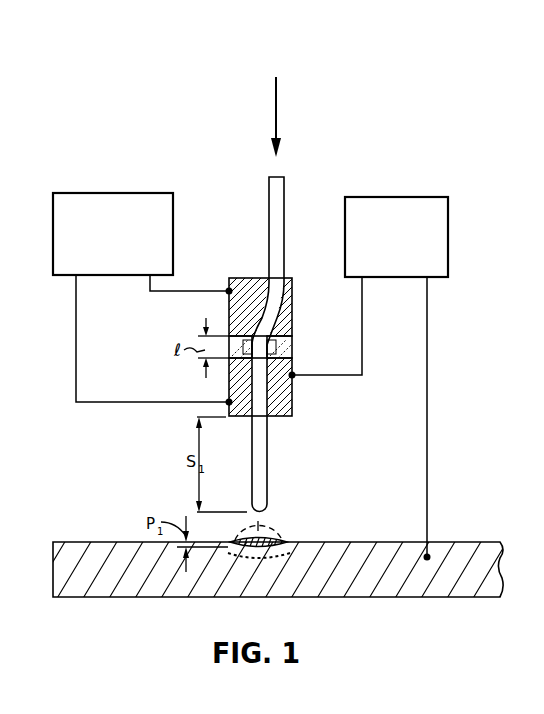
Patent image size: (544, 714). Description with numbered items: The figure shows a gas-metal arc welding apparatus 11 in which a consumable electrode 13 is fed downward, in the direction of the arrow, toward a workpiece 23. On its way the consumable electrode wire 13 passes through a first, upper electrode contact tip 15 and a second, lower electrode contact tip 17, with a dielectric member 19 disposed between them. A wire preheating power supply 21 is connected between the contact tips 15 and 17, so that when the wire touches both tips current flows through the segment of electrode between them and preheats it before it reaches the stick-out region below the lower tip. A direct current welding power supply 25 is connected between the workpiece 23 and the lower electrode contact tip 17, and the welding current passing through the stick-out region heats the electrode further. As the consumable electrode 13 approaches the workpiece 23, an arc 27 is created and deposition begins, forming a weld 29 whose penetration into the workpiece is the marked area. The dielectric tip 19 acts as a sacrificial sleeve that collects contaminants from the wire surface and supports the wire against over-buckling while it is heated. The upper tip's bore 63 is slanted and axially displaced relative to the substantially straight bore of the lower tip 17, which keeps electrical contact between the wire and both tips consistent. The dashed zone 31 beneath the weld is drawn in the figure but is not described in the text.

The gas-metal arc welding apparatus 11 is at (289, 162).
The consumable electrode 13 is at (285, 195).
The first electrode contact tip 15 is at (290, 308).
The second electrode contact tip 17 is at (292, 402).
The dielectric member 19 is at (293, 345).
The wire preheating power supply 21 is at (124, 193).
The workpiece 23 is at (502, 558).
The direct current welding power supply 25 is at (428, 197).
The arc 27 is at (268, 532).
The weld 29 is at (285, 540).
The heat affected zone 31 is at (268, 562).
The upper tip's bore 63 is at (259, 298).